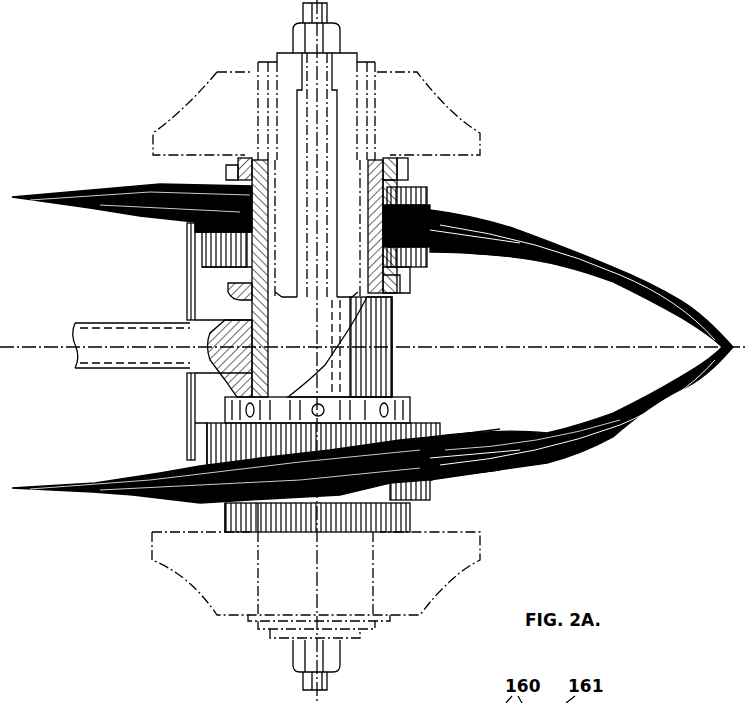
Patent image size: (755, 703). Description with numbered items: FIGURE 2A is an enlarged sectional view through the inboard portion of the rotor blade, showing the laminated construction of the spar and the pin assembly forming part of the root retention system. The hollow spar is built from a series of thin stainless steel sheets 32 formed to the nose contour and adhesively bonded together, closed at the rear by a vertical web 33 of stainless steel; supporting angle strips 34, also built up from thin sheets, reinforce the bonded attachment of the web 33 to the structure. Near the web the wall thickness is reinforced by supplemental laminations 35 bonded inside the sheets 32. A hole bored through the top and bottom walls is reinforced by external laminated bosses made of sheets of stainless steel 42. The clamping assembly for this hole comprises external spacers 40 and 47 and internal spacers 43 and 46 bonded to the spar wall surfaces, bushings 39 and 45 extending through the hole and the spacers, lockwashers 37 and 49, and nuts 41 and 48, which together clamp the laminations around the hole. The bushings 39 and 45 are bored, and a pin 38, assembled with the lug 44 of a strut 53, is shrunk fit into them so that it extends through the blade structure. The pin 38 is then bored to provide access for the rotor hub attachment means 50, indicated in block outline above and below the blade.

The stainless steel sheets 32 is at (648, 290).
The vertical web 33 is at (187, 292).
The supporting angle strips 34 is at (187, 242).
The supplemental laminations 35 is at (462, 248).
The lockwasher 37 is at (228, 176).
The pin 38 is at (268, 340).
The bushing 39 is at (241, 290).
The external spacer 40 is at (430, 202).
The nut 41 is at (408, 176).
The sheets of stainless steel 42 is at (455, 225).
The internal spacer 43 is at (420, 283).
The lug 44 is at (382, 350).
The bushing 45 is at (410, 408).
The internal spacer 46 is at (416, 428).
The external spacer 47 is at (432, 493).
The nut 48 is at (410, 520).
The lockwasher 49 is at (258, 510).
The rotor hub attachment means 50 is at (420, 86).
The strut 53 is at (107, 372).